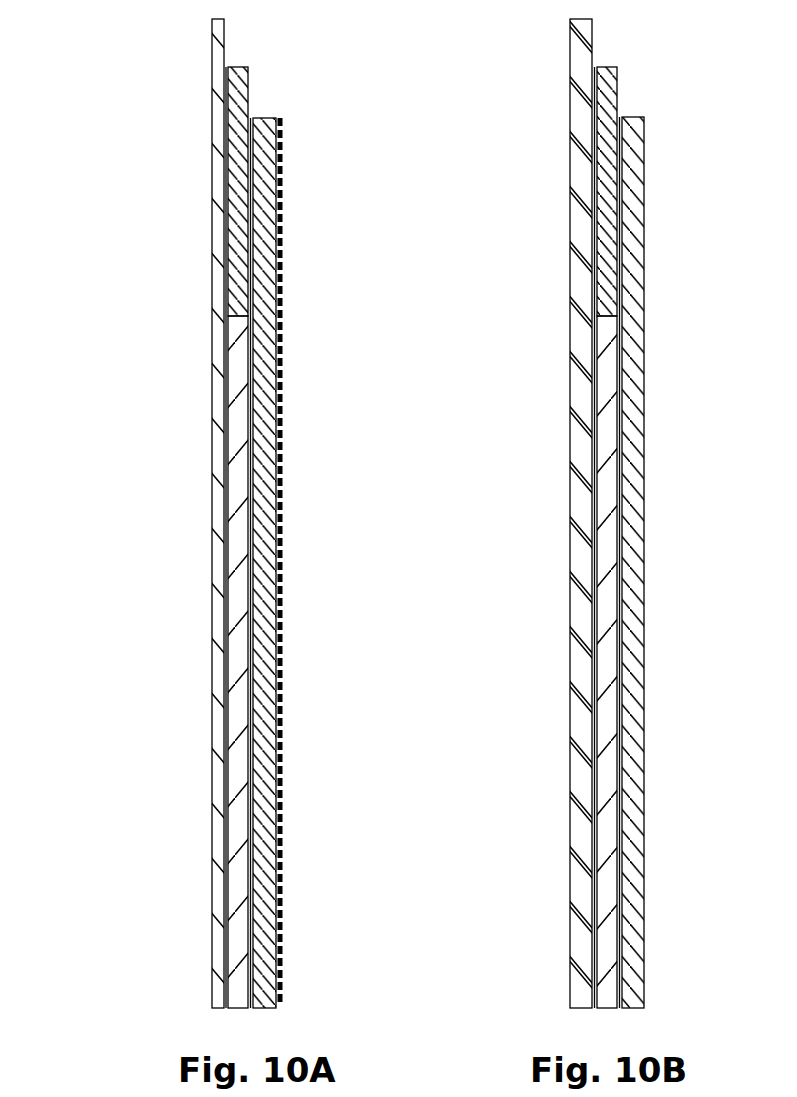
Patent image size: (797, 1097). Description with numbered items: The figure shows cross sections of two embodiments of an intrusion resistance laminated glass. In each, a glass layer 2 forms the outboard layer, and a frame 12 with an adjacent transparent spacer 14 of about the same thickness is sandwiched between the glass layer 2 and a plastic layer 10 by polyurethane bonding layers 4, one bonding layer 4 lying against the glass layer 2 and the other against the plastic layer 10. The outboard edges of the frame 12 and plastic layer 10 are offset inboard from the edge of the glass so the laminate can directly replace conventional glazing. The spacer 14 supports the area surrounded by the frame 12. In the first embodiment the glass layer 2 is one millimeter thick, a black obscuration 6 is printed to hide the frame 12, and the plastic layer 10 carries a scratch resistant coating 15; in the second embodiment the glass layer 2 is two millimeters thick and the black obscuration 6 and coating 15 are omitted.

In FIG. 10A, the glass layer 2 is at (215, 246).
In FIG. 10B, the glass layer 2 is at (568, 248).
In FIG. 10A, the bonding layer 4 is at (232, 953).
In FIG. 10B, the bonding layer 4 is at (597, 954).
In FIG. 10A, the black obscuration 6 is at (255, 163).
In FIG. 10A, the plastic layer 10 is at (277, 583).
In FIG. 10B, the plastic layer 10 is at (644, 577).
In FIG. 10A, the frame 12 is at (250, 93).
In FIG. 10B, the frame 12 is at (617, 102).
In FIG. 10A, the spacer 14 is at (242, 875).
In FIG. 10B, the spacer 14 is at (608, 877).
In FIG. 10A, the scratch resistant coating 15 is at (280, 243).